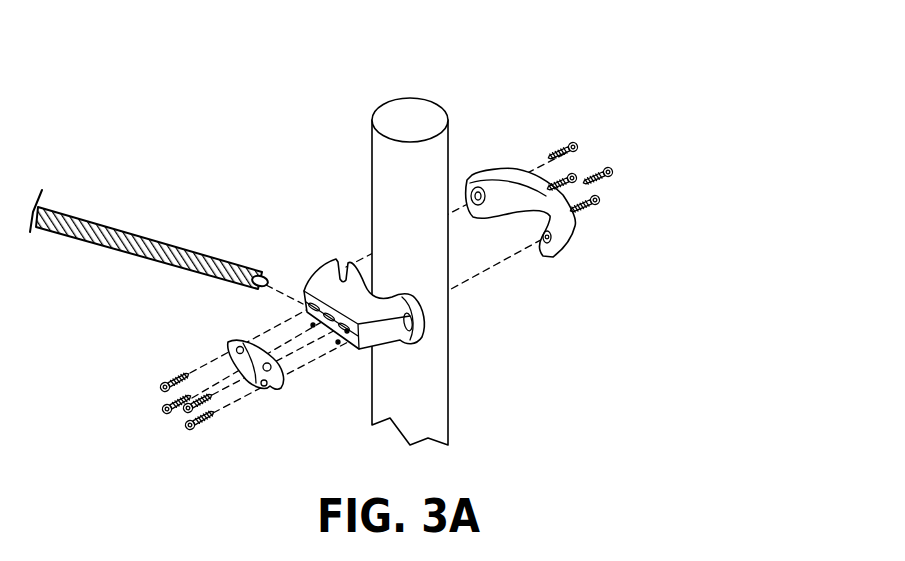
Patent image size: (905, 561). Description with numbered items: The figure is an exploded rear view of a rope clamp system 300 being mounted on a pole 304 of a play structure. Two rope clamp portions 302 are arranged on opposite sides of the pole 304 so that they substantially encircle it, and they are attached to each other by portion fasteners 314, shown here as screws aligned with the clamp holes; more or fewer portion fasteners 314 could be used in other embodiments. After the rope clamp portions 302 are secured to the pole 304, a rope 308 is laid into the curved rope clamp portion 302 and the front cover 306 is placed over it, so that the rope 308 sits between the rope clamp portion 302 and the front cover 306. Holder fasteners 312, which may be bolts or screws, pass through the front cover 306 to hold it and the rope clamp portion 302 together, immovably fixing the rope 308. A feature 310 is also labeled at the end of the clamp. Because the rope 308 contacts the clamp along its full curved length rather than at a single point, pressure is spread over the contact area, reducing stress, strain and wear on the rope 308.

The rope clamp system 300 is at (628, 270).
The rope clamp portion 302 is at (332, 266).
The pole 304 is at (385, 153).
The front cover 306 is at (270, 392).
The rope 308 is at (194, 247).
The post 310 is at (403, 337).
The holder fastener 312 is at (186, 427).
The portion fastener 314 is at (600, 200).